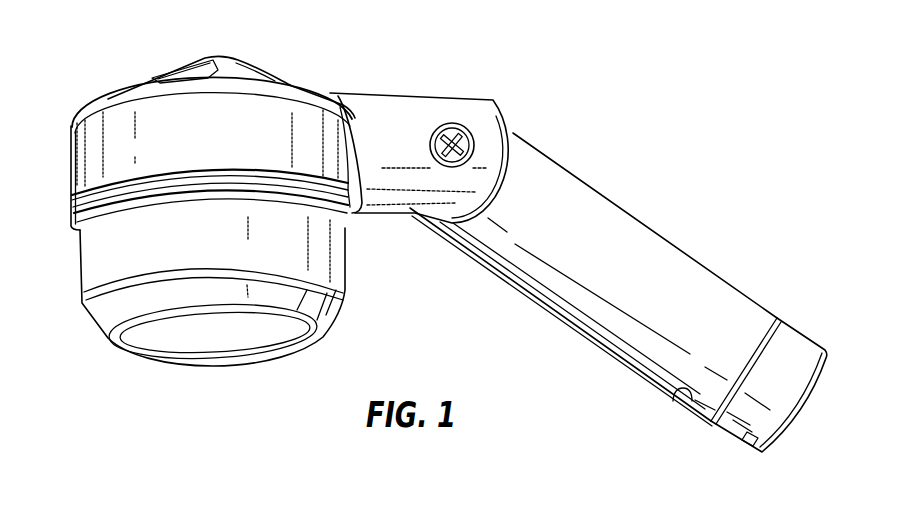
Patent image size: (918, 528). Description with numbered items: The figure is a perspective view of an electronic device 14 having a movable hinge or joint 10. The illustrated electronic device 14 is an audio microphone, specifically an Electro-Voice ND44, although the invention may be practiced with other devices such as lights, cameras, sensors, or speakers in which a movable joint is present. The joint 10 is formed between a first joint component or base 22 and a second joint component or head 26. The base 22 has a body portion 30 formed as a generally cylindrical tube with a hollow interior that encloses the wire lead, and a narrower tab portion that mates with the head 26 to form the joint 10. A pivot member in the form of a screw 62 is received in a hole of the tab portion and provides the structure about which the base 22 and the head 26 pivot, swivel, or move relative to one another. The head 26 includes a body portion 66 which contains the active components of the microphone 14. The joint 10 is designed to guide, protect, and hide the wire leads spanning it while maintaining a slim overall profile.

The movable joint 10 is at (438, 300).
The electronic device 14 is at (350, 43).
The base 22 is at (712, 270).
The head 26 is at (90, 267).
The body portion 30 is at (623, 348).
The pivot member 62 is at (453, 133).
The body portion 66 is at (93, 138).